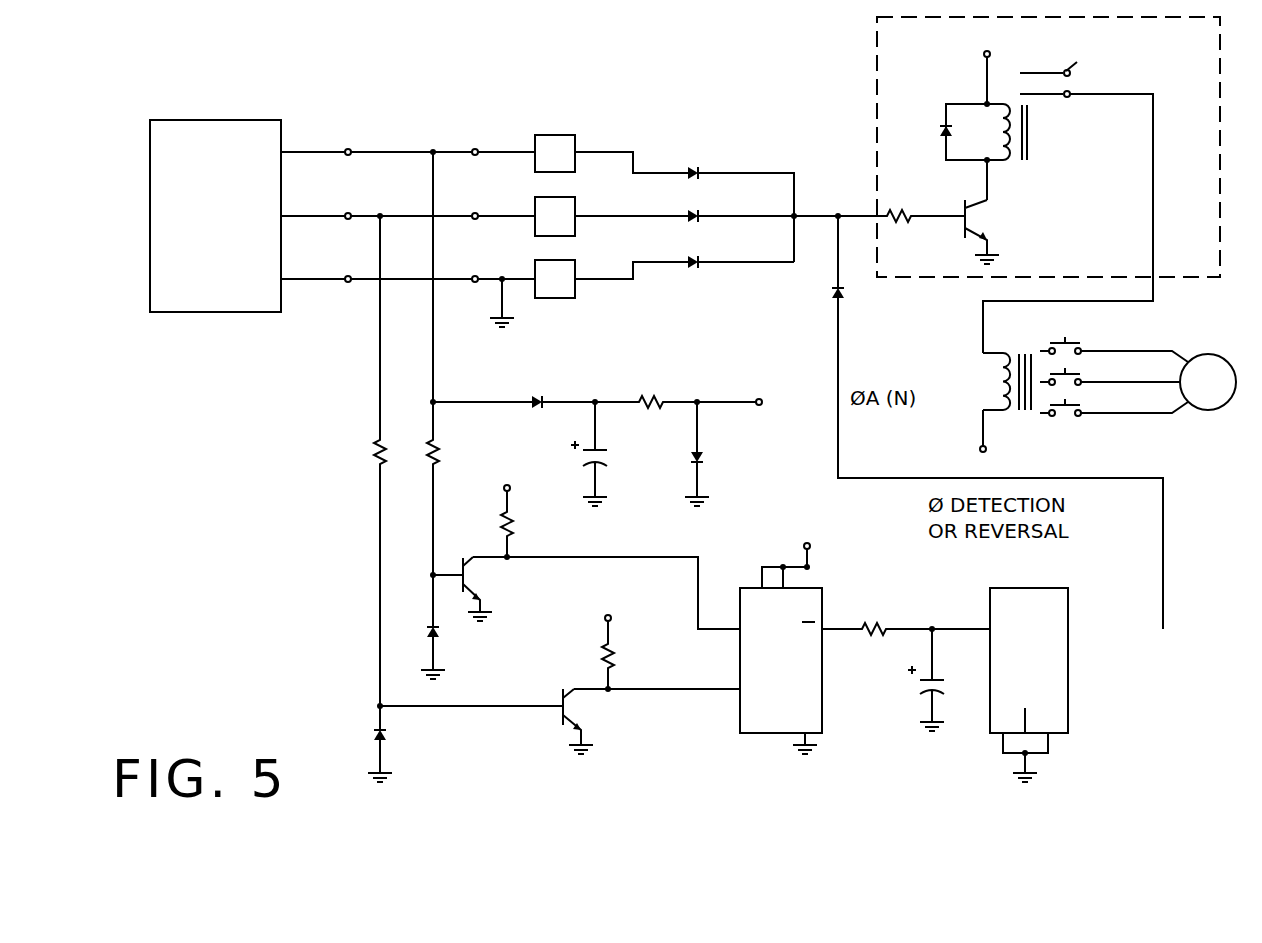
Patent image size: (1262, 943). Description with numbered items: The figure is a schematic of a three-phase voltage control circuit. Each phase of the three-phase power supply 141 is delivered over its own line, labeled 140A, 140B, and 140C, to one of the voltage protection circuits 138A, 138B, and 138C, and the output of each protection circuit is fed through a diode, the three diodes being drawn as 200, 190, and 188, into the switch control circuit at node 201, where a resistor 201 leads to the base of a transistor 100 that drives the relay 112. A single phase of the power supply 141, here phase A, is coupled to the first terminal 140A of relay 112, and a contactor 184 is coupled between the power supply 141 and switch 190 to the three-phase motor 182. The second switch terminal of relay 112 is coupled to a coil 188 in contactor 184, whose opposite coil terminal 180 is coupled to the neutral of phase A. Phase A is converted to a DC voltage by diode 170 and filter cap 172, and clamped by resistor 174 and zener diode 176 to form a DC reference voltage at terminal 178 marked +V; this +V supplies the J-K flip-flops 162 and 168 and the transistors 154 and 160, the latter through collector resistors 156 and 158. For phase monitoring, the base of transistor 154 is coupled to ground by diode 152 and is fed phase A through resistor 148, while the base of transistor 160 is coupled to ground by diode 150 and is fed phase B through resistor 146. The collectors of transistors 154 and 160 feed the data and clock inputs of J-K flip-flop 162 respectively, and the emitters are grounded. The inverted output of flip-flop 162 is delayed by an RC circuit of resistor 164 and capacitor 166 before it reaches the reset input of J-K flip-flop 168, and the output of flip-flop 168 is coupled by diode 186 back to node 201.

The three-phase power supply 141 is at (205, 117).
The first terminal of relay 140A is at (347, 147).
The phase B line 140B is at (347, 211).
The phase C line 140C is at (347, 274).
The voltage protection circuit 138A is at (535, 133).
The voltage protection circuit 138B is at (535, 196).
The voltage protection circuit 138C is at (535, 259).
The diode 200 is at (699, 170).
The switch 190 is at (699, 213).
The coil 188 is at (699, 255).
The node 201 is at (843, 212).
The transistor 100 is at (980, 206).
The relay 112 is at (1050, 155).
The terminal +V 178 is at (983, 53).
The diode 186 is at (845, 295).
The terminal 180 is at (980, 449).
The contactor 184 is at (1047, 430).
The three-phase motor 182 is at (1226, 405).
The resistor 146 is at (372, 447).
The resistor 148 is at (440, 452).
The diode 170 is at (533, 398).
The resistor 174 is at (655, 398).
The filter cap 172 is at (628, 448).
The zener diode 176 is at (710, 458).
The transistor 154 is at (475, 564).
The resistor 156 is at (514, 522).
The diode 152 is at (441, 634).
The resistor 158 is at (616, 653).
The transistor 160 is at (578, 696).
The diode 150 is at (386, 736).
The J-K flip-flop 162 is at (823, 589).
The resistor 164 is at (875, 620).
The capacitor 166 is at (925, 690).
The J-K flip-flop 168 is at (1069, 589).